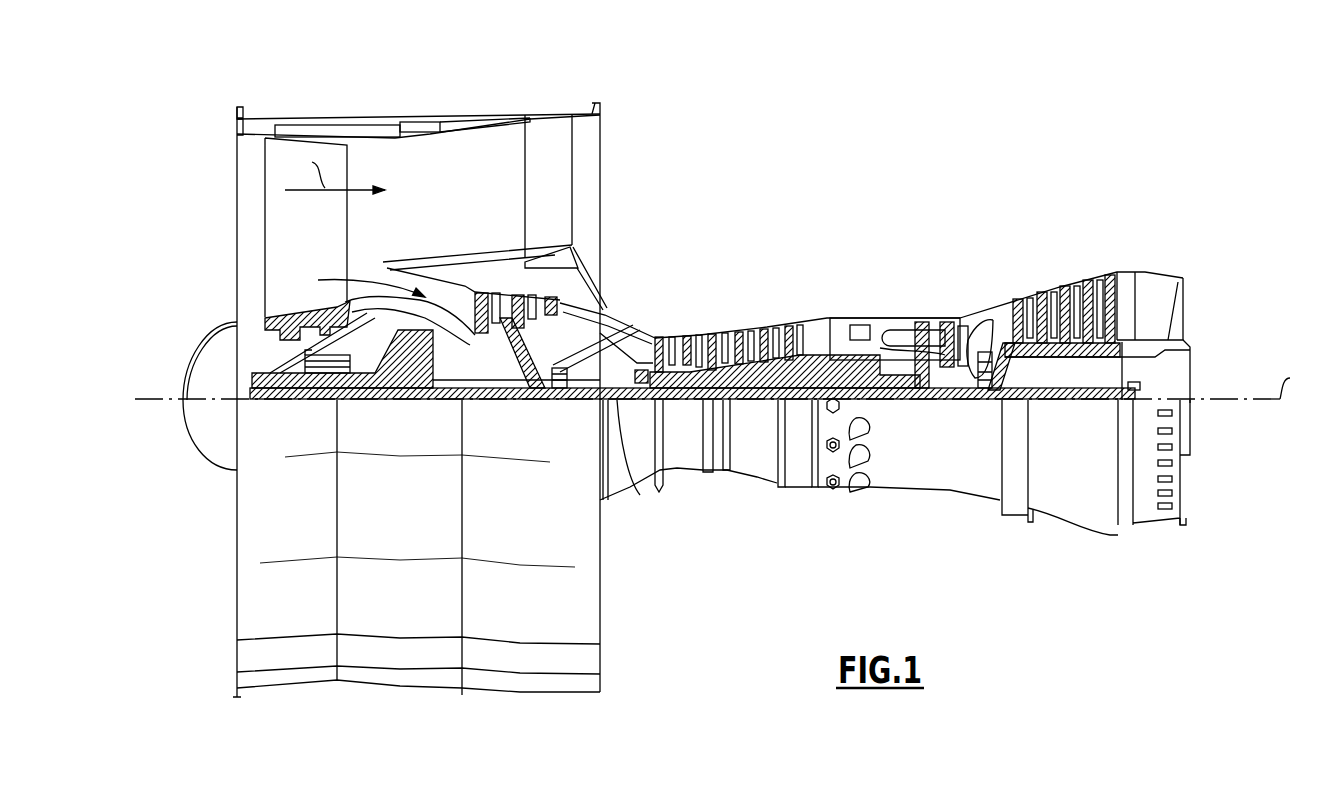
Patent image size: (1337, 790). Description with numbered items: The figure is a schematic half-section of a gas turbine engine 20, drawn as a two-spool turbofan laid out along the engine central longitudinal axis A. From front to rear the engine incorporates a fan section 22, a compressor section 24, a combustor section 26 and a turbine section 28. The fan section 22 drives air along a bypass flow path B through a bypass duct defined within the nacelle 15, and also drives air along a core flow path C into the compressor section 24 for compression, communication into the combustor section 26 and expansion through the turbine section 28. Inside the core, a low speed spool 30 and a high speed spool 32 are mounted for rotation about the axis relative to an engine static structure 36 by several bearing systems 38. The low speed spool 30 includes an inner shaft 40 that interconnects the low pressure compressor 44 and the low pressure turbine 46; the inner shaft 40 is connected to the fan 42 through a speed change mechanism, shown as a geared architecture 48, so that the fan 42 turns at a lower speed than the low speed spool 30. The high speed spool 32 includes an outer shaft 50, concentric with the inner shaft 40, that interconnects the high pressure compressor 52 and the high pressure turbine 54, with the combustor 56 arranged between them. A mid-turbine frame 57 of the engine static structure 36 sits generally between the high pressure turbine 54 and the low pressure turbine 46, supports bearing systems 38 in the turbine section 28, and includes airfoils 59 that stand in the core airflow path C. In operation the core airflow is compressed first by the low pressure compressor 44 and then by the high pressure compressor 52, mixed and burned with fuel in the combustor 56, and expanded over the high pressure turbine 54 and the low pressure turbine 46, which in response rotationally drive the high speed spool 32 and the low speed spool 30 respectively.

The nacelle 15 is at (418, 122).
The gas turbine engine 20 is at (721, 368).
The fan section 22 is at (391, 368).
The compressor section 24 is at (671, 308).
The combustor section 26 is at (895, 311).
The turbine section 28 is at (1062, 299).
The low speed spool 30 is at (800, 463).
The high speed spool 32 is at (692, 383).
The engine static structure 36 is at (798, 487).
The bearing systems 38 is at (554, 386).
The inner shaft 40 is at (615, 396).
The fan 42 is at (288, 244).
The low pressure compressor 44 is at (580, 254).
The low pressure turbine 46 is at (1067, 287).
The geared architecture 48 is at (424, 380).
The outer shaft 50 is at (885, 385).
The high pressure compressor 52 is at (726, 343).
The high pressure turbine 54 is at (935, 313).
The combustor 56 is at (873, 337).
The mid-turbine frame 57 is at (1038, 309).
The airfoils 59 is at (993, 333).